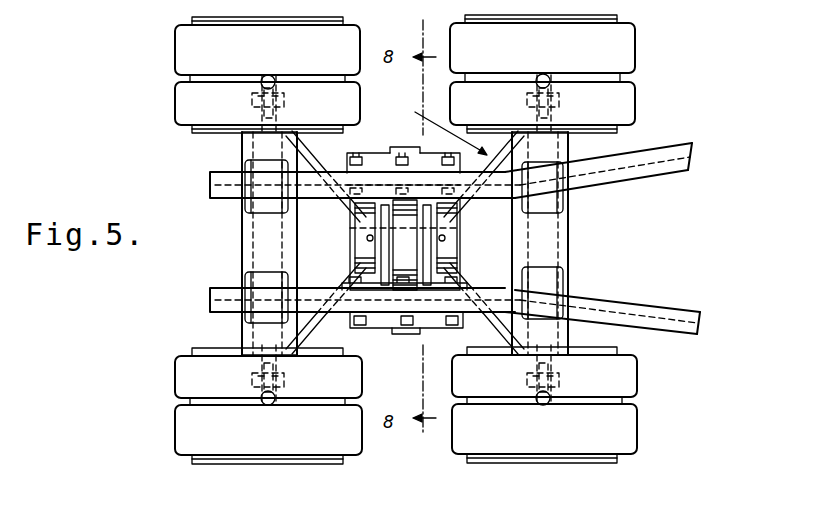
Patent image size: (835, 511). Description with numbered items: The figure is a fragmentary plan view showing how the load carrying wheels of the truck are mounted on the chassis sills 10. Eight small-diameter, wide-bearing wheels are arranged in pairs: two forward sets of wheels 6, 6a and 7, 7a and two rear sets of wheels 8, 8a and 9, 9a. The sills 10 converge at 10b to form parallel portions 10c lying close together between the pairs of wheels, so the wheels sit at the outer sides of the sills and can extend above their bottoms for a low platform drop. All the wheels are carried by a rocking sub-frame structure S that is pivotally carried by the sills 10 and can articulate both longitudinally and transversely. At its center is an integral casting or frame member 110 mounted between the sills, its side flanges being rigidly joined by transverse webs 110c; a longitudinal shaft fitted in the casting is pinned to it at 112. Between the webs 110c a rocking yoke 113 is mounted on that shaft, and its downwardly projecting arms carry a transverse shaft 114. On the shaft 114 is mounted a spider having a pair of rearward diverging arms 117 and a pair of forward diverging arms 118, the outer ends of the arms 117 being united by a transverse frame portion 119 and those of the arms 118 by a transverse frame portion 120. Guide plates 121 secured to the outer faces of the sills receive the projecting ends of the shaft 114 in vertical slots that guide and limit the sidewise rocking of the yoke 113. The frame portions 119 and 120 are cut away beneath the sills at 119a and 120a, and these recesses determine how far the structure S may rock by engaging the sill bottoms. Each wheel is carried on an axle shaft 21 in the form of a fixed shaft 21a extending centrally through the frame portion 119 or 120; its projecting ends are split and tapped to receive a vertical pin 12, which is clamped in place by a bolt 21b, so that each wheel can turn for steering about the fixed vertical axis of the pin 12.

The forward load carrying wheel 6 is at (176, 50).
The forward load carrying wheel 6a is at (177, 104).
The forward load carrying wheel 7 is at (177, 433).
The forward load carrying wheel 7a is at (177, 378).
The rear load carrying wheel 8 is at (634, 48).
The rear load carrying wheel 8a is at (634, 98).
The rear load carrying wheel 9 is at (634, 425).
The rear load carrying wheel 9a is at (630, 387).
The chassis sill 10 is at (668, 143).
The converging portion of sill 10b is at (651, 170).
The parallel portion of sill 10c is at (230, 190).
The pin 12 is at (278, 62).
The wheel axle 21 is at (252, 136).
The fixed shaft 21a is at (262, 112).
The bolt 21b is at (252, 92).
The frame member 110 is at (458, 208).
The transverse web 110c is at (378, 273).
The pin 112 is at (367, 239).
The rocking frame member 113 is at (400, 236).
The transverse shaft 114 is at (402, 147).
The rearward diverging arm 117 is at (507, 150).
The forward diverging arm 118 is at (317, 147).
The transverse frame portion 119 is at (566, 242).
The recess 119a is at (550, 206).
The transverse frame portion 120 is at (248, 250).
The recess 120a is at (258, 168).
The guide plate 121 is at (382, 158).
The sub-frame structure S is at (440, 127).